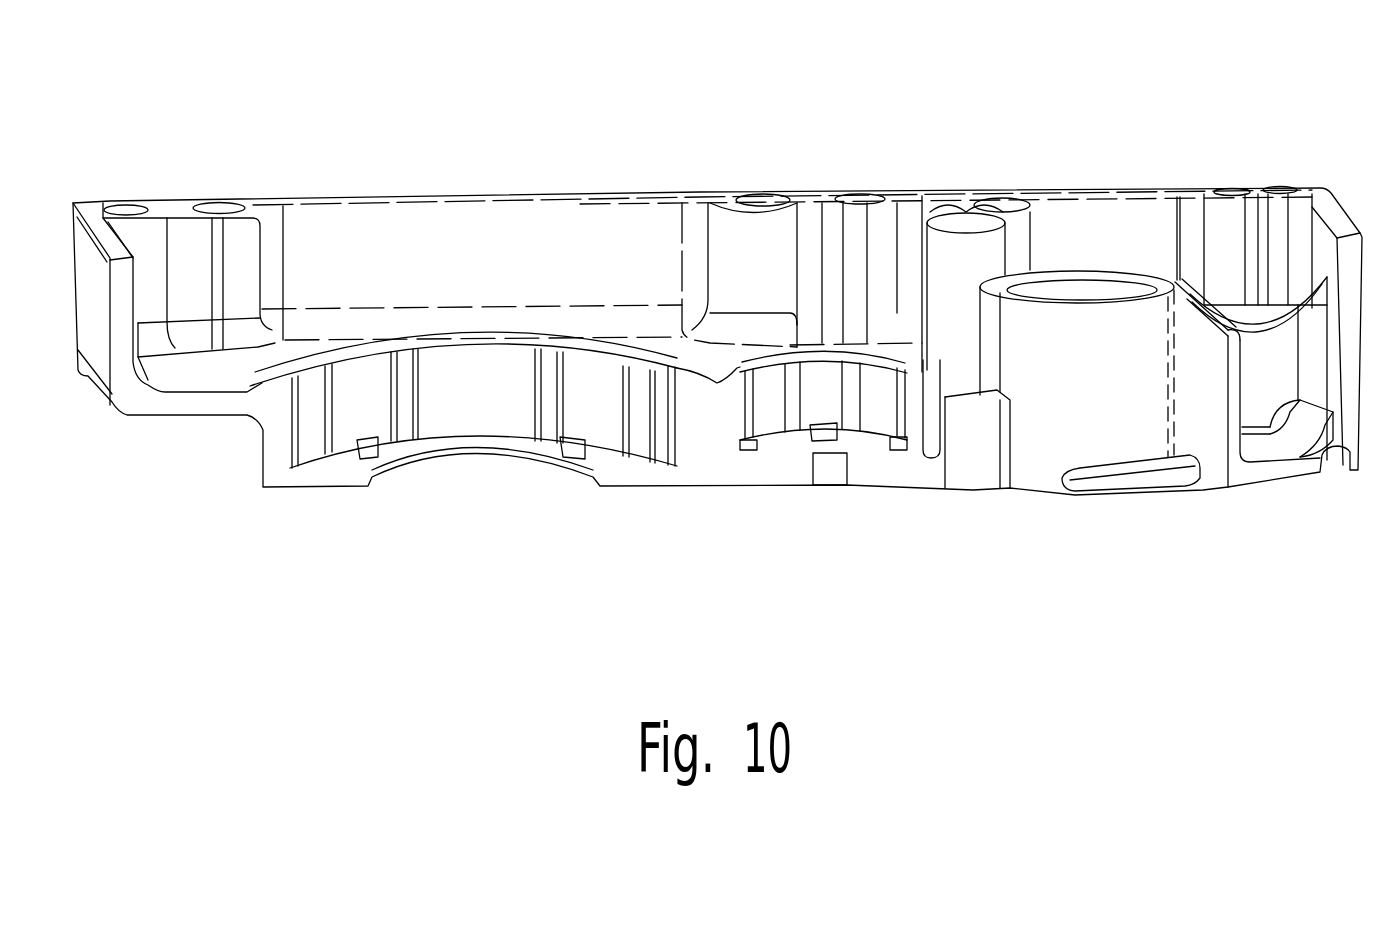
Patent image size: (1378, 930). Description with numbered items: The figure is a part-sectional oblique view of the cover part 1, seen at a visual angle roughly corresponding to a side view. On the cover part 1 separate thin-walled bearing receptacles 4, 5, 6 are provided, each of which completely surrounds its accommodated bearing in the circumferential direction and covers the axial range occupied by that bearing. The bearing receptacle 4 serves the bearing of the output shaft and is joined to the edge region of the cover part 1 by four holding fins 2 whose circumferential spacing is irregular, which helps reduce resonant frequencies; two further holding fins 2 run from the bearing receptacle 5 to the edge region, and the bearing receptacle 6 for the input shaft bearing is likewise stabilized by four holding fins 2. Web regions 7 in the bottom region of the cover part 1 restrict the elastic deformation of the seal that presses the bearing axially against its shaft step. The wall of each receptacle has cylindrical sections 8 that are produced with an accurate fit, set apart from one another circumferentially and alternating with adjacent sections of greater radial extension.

The cover part 1 is at (413, 247).
The holding fins 2 is at (1212, 433).
The bearing receptacle 4 is at (590, 343).
The bearing receptacle 5 is at (822, 343).
The bearing receptacle 6 is at (1125, 267).
The web regions 7 is at (377, 442).
The cylindrical sections 8 is at (478, 427).